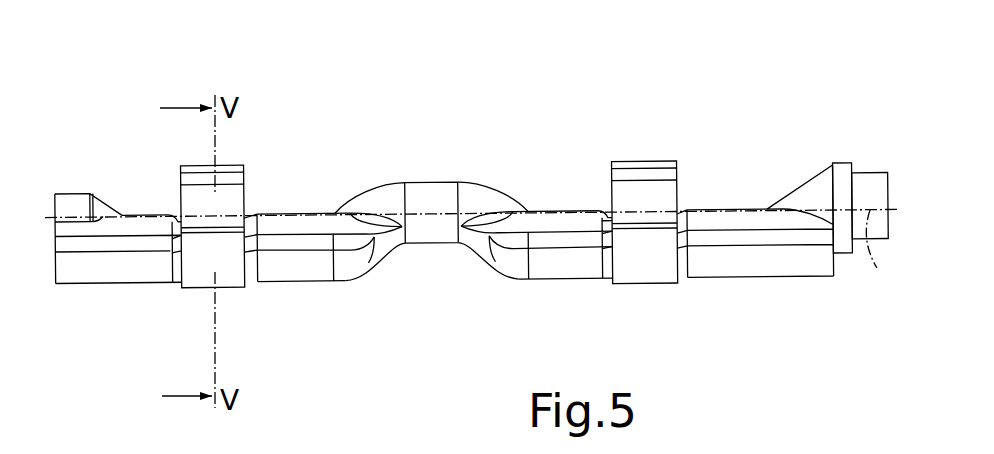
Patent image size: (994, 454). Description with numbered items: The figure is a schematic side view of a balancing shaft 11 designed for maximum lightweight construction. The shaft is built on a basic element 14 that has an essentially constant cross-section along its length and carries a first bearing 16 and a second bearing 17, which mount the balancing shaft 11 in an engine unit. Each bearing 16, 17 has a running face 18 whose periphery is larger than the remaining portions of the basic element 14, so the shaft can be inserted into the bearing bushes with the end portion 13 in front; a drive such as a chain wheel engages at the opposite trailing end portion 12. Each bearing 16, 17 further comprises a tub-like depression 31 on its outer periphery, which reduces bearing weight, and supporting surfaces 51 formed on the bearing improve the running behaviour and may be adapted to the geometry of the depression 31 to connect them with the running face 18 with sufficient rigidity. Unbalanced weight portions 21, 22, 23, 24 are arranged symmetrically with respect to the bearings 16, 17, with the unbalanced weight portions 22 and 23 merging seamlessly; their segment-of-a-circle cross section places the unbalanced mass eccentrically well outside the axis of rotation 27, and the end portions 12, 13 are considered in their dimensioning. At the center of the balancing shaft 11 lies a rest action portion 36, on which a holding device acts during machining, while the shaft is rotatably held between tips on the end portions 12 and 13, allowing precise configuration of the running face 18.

The balancing shaft 11 is at (660, 105).
The trailing end portion 12 is at (877, 160).
The end portion 13 is at (74, 184).
The basic element 14 is at (482, 282).
The first bearing 16 is at (190, 293).
The second bearing 17 is at (630, 293).
The running face 18 is at (233, 259).
The unbalanced weight portion 21 is at (134, 291).
The unbalanced weight portion 22 is at (302, 291).
The unbalanced weight portion 23 is at (572, 288).
The unbalanced weight portion 24 is at (748, 291).
The axis of rotation 27 is at (879, 256).
The depression 31 is at (231, 202).
The rest action portion 36 is at (428, 171).
The supporting surface 51 is at (232, 170).